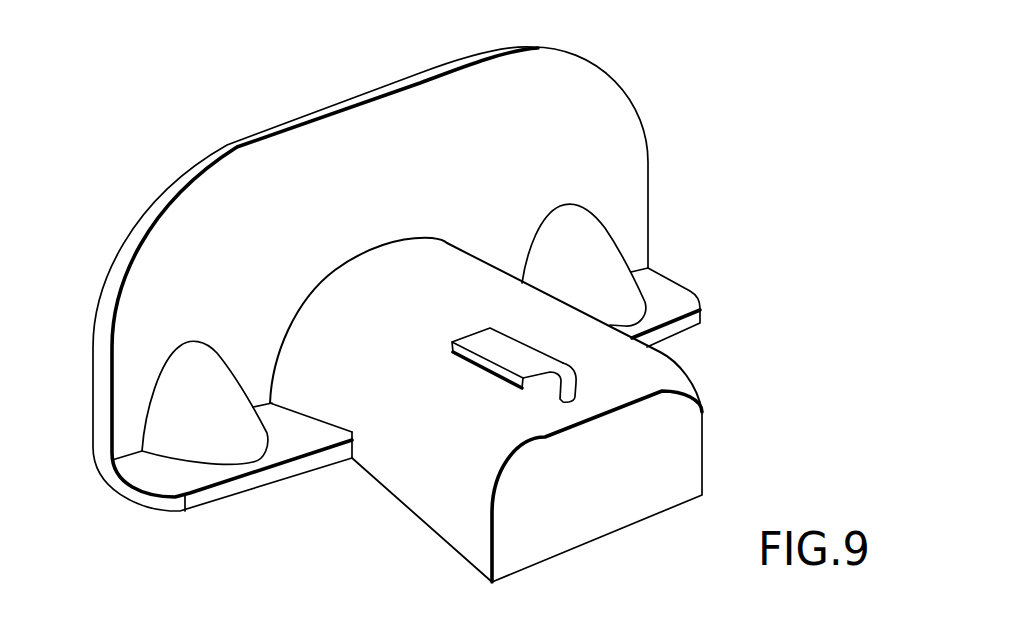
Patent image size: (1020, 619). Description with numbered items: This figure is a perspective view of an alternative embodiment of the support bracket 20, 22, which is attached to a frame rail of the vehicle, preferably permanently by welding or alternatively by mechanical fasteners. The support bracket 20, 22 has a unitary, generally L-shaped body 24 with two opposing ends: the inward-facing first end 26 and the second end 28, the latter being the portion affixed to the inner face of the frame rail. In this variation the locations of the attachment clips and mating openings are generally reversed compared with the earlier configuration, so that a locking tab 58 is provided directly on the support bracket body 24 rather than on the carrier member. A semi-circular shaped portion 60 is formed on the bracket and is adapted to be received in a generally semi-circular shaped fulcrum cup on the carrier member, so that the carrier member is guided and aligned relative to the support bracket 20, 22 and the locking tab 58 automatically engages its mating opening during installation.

The support bracket 20 is at (645, 55).
The support bracket 22 is at (397, 314).
The L-shaped body 24 is at (643, 194).
The second end 28 is at (148, 210).
The first end 26 is at (590, 533).
The semi-circular shaped portion 60 is at (443, 437).
The locking tab 58 is at (538, 385).